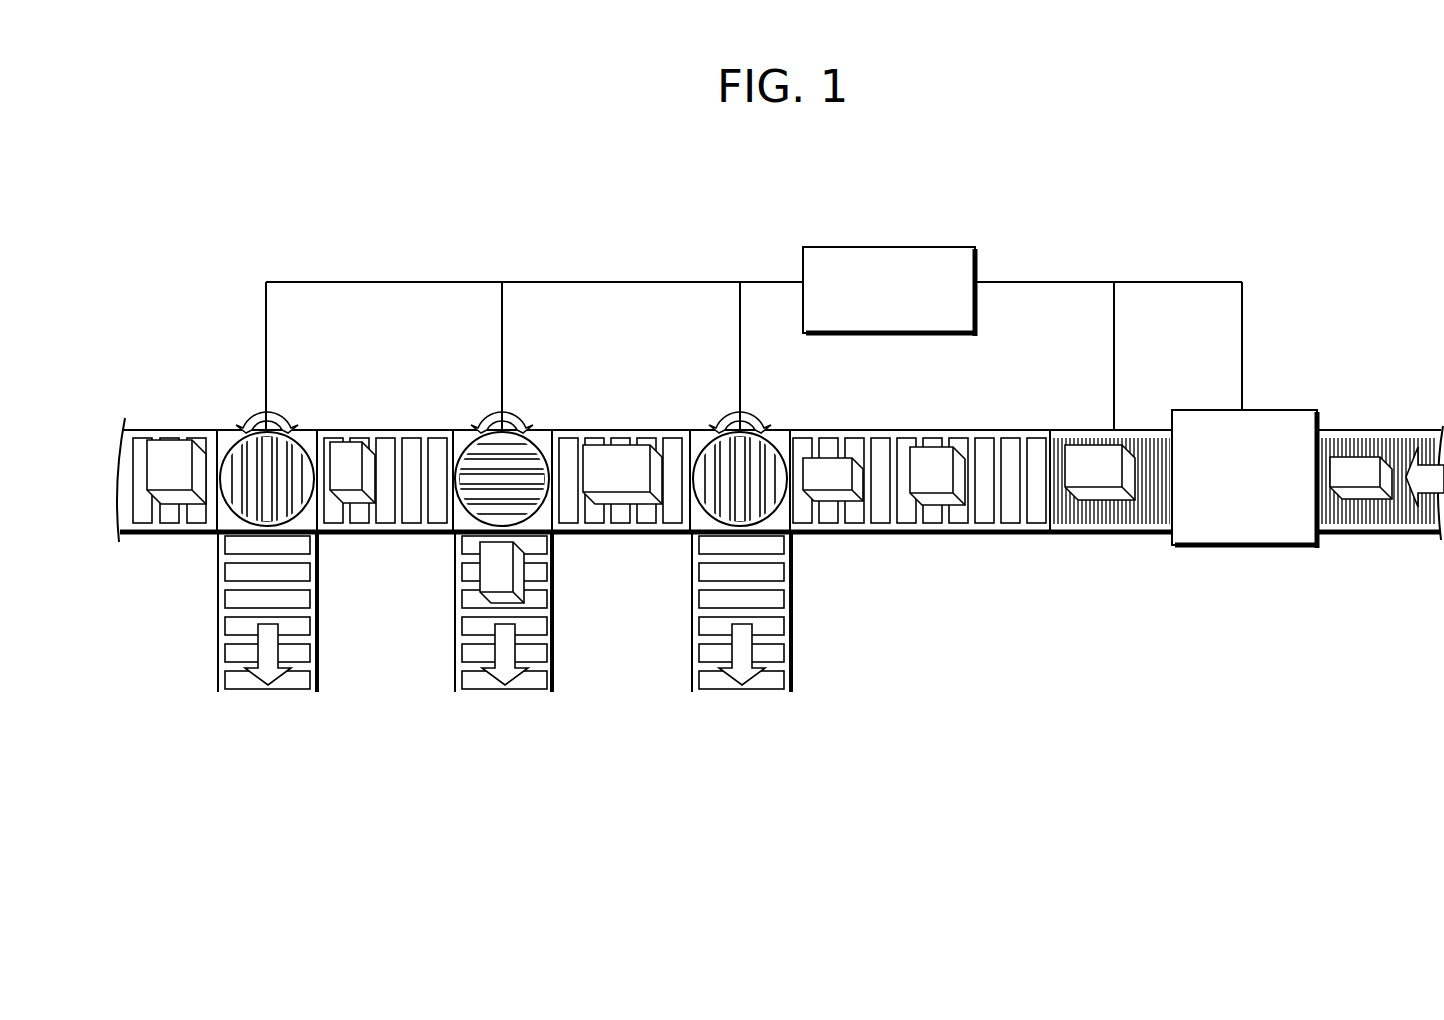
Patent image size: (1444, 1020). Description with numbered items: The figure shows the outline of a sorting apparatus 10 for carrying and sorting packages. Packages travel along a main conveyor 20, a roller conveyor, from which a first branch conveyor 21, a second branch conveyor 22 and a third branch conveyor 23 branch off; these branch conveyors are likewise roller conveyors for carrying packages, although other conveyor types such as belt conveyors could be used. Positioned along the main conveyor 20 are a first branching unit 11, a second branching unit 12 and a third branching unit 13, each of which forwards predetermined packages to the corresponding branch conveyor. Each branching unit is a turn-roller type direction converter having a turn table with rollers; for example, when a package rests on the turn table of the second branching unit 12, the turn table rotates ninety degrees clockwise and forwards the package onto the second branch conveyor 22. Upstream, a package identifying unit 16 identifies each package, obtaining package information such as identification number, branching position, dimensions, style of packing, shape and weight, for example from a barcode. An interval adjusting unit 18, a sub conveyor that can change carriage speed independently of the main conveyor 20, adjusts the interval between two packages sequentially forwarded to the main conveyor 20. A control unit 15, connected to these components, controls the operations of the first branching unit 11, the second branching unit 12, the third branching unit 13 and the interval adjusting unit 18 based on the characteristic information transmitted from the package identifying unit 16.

The sorting apparatus 10 is at (1313, 238).
The first branching unit 11 is at (778, 430).
The second branching unit 12 is at (540, 430).
The third branching unit 13 is at (302, 430).
The control unit 15 is at (914, 247).
The package identifying unit 16 is at (1268, 410).
The interval adjusting unit 18 is at (1097, 538).
The main conveyor 20 is at (866, 535).
The first branch conveyor 21 is at (795, 600).
The second branch conveyor 22 is at (556, 600).
The third branch conveyor 23 is at (320, 600).